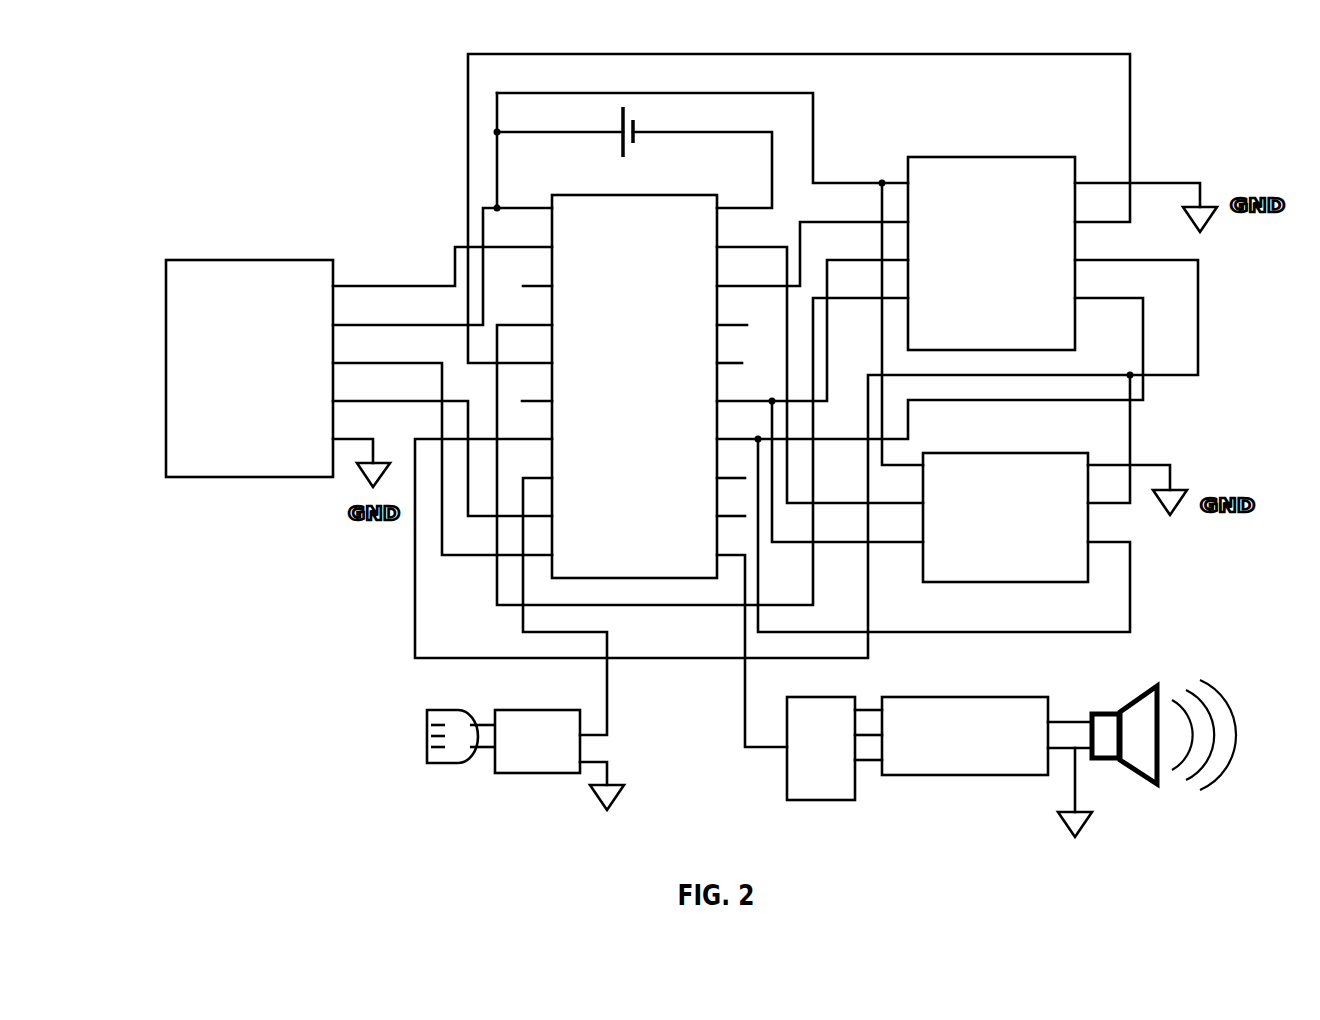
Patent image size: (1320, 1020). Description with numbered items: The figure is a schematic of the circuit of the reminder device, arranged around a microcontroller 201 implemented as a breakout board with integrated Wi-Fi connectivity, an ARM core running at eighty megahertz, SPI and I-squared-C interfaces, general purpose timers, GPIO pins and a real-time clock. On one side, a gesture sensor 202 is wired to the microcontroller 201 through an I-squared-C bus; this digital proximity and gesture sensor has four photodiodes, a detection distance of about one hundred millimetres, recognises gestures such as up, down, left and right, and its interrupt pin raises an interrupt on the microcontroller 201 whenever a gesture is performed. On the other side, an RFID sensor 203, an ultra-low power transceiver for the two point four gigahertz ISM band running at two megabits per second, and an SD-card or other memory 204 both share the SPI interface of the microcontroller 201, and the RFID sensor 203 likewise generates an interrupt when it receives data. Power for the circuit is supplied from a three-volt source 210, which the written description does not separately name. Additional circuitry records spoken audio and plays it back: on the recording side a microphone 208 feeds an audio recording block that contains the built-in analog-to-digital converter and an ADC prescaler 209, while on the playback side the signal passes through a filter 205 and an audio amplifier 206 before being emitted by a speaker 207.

The microcontroller 201 is at (632, 372).
The gesture sensor 202 is at (237, 378).
The RFID sensor 203 is at (1009, 221).
The SD-card or other memory 204 is at (1018, 521).
The filter 205 is at (819, 753).
The audio amplifier 206 is at (960, 739).
The speaker 207 is at (1164, 754).
The microphone 208 is at (440, 775).
The ADC prescaler 209 is at (535, 728).
The 3V battery 210 is at (652, 129).